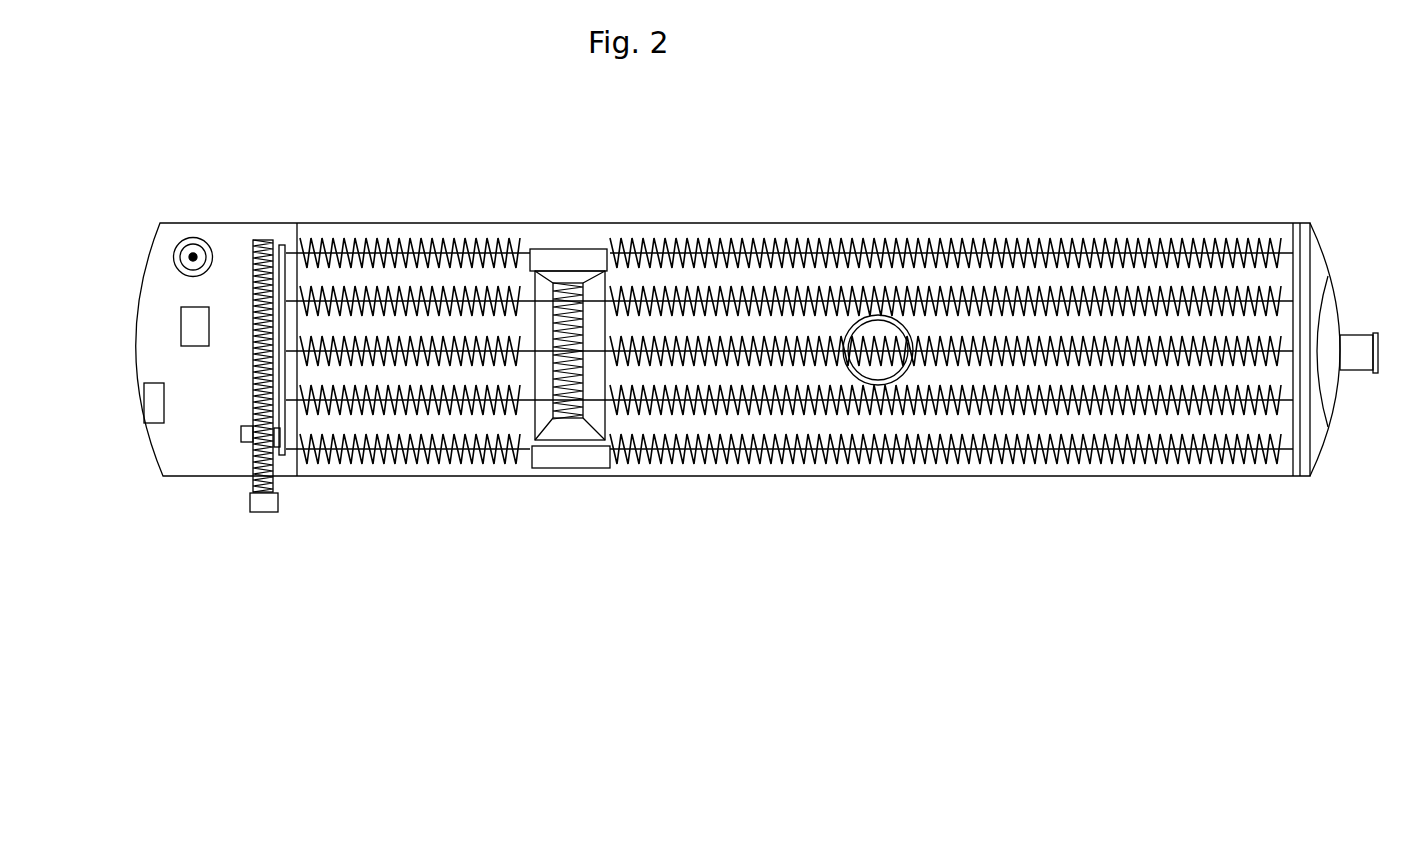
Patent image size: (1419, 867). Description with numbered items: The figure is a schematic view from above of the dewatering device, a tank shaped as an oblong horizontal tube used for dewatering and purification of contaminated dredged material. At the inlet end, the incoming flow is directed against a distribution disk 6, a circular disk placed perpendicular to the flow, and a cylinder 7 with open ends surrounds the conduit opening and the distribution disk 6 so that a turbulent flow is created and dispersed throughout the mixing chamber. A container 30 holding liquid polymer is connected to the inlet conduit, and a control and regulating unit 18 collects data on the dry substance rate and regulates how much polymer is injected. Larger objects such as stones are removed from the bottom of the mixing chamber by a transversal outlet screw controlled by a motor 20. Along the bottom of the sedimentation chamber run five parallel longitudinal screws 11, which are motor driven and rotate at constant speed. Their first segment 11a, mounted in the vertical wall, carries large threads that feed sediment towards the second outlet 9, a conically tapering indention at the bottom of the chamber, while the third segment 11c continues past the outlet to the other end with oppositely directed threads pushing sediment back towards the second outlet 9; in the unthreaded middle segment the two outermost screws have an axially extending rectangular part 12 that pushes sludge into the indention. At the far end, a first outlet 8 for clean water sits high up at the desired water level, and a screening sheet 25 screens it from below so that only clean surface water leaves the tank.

The distribution disk 6 is at (178, 245).
The cylinder 7 is at (178, 270).
The first outlet 8 is at (1355, 342).
The second outlet 9 is at (575, 420).
The longitudinal screws 11 is at (977, 243).
The first segment 11a is at (388, 232).
The third segment 11c is at (752, 234).
The axially extending rectangular part 12 is at (560, 252).
The control and regulating unit 18 is at (155, 415).
The motor 20 is at (278, 500).
The screening sheet 25 is at (1320, 383).
The container 30 is at (190, 328).